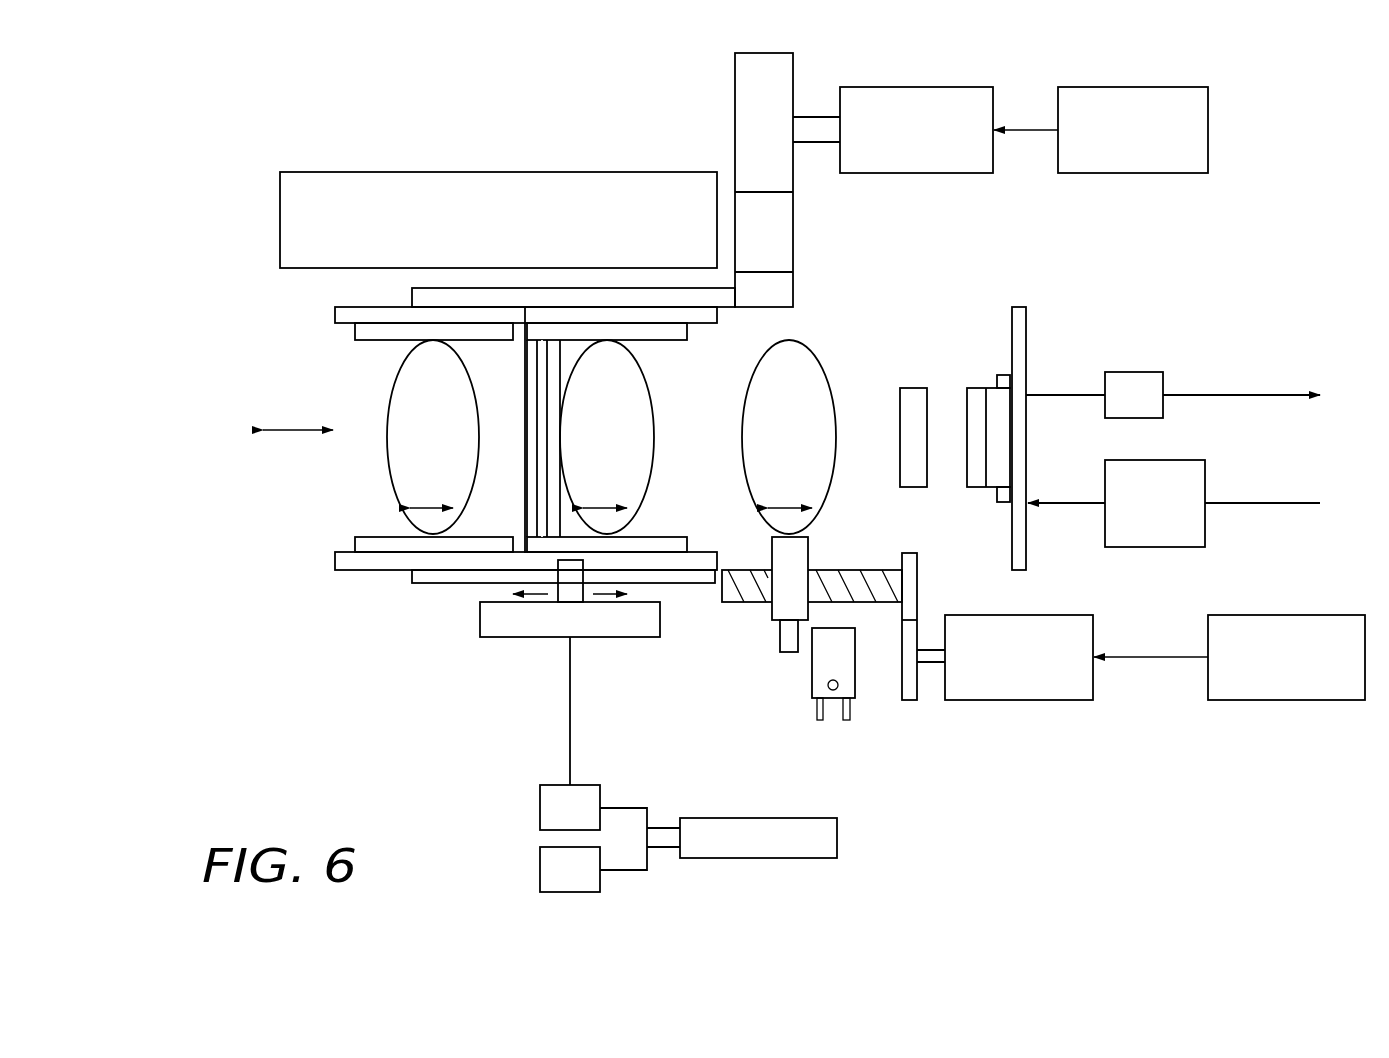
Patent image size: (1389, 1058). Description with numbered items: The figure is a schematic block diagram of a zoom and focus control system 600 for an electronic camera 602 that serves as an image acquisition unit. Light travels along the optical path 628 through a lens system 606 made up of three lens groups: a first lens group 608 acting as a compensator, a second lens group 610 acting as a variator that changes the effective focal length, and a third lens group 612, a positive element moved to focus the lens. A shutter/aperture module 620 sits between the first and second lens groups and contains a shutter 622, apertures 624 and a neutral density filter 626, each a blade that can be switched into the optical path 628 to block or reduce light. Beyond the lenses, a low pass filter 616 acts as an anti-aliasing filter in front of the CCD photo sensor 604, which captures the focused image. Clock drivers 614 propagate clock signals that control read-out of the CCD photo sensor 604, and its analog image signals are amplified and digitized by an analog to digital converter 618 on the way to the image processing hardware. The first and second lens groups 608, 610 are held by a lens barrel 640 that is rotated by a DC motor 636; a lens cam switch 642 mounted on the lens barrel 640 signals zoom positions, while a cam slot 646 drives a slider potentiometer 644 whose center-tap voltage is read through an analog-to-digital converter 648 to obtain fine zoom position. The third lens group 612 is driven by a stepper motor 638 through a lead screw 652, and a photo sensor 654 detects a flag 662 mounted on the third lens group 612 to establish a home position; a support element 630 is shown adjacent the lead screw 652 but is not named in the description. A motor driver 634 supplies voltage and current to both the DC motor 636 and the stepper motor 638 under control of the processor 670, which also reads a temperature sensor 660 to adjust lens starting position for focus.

The zoom and focus control system 600 is at (166, 240).
The electronic camera 602 is at (255, 494).
The CCD photo sensor 604 is at (997, 422).
The lens system 606 is at (762, 337).
The first lens group 608 is at (390, 473).
The second lens group 610 is at (650, 457).
The third lens group 612 is at (820, 362).
The clock drivers 614 is at (1105, 483).
The low pass filter 616 is at (913, 388).
The analog to digital converter 618 is at (1135, 372).
The shutter/aperture module 620 is at (525, 365).
The shutter 622 is at (527, 428).
The apertures 624 is at (537, 457).
The neutral density filter 626 is at (560, 358).
The optical path 628 is at (302, 430).
The bearing support 630 is at (918, 568).
The motor driver 634 is at (1290, 700).
The DC motor 636 is at (863, 173).
The stepper motor 638 is at (1057, 615).
The lens barrel 640 is at (335, 313).
The lens cam switch 642 is at (663, 172).
The slider potentiometer 644 is at (530, 637).
The cam slot 646 is at (573, 577).
The analog-to-digital converter 648 is at (540, 813).
The lead screw 652 is at (835, 570).
The photo sensor 654 is at (812, 677).
The temperature sensor 660 is at (540, 871).
The flag 662 is at (780, 642).
The processor 670 is at (838, 836).